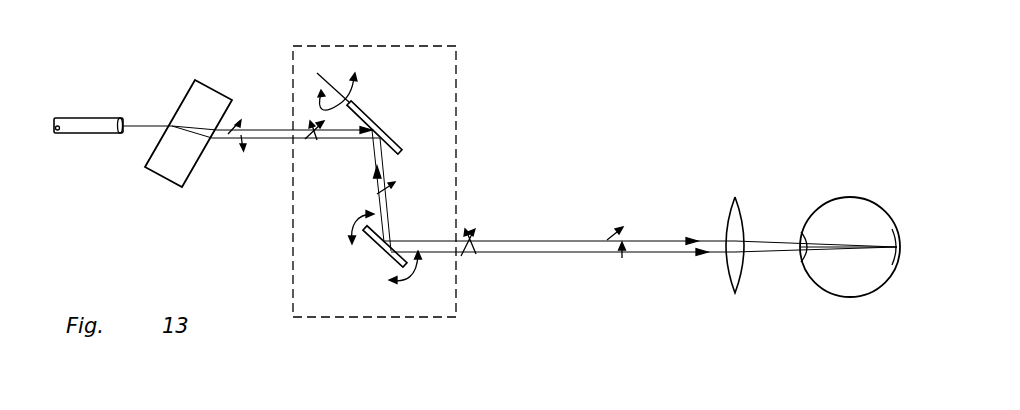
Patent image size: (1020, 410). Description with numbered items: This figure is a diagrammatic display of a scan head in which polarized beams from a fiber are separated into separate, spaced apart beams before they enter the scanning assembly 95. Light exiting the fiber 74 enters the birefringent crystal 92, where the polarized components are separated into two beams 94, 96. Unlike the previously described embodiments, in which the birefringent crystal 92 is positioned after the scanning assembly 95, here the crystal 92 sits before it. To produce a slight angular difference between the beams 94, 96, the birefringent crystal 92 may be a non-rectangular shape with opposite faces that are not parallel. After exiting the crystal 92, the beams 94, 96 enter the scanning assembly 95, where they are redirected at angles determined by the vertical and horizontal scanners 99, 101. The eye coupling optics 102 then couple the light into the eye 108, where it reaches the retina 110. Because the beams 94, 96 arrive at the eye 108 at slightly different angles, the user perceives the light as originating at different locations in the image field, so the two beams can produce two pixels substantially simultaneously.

The fiber 74 is at (82, 134).
The birefringent crystal 92 is at (202, 80).
The first light beam 94 is at (670, 238).
The scanning assembly 95 is at (345, 44).
The second light beam 96 is at (665, 253).
The vertical scanner 99 is at (375, 127).
The horizontal scanner 101 is at (383, 252).
The eye coupling optics 102 is at (737, 203).
The eye 108 is at (832, 293).
The retina 110 is at (893, 232).